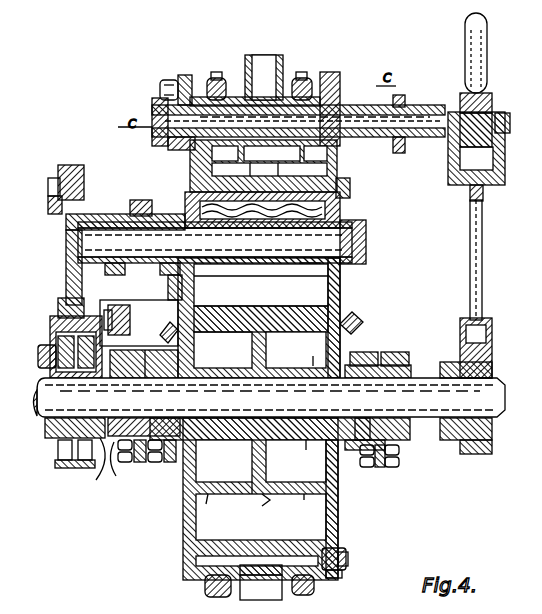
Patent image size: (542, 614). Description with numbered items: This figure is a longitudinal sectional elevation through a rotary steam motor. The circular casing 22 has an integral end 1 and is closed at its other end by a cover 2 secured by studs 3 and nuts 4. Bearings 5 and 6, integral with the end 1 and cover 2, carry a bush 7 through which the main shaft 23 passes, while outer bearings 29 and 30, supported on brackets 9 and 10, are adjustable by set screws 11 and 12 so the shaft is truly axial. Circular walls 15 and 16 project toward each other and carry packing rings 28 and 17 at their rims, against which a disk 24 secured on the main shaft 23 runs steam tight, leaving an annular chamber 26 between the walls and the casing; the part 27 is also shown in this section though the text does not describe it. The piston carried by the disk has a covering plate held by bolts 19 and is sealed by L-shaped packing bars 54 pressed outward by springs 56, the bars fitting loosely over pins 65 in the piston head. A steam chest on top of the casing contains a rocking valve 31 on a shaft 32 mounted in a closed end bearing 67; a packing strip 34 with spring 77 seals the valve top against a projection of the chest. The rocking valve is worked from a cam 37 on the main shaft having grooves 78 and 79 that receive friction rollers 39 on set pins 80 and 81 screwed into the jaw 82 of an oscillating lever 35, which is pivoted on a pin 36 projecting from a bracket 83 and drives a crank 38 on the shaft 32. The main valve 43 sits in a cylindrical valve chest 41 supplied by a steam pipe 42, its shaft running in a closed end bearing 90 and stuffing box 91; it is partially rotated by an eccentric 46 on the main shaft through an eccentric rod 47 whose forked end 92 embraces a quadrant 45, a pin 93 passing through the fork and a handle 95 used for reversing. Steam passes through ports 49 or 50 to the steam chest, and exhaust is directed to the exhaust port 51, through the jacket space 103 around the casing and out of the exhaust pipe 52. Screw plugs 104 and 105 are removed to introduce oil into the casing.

The integral end 1 is at (183, 521).
The cover 2 is at (338, 520).
The studs 3 is at (348, 556).
The nuts 4 is at (342, 574).
The bearing 5 is at (214, 438).
The bearing 6 is at (306, 452).
The bush 7 is at (204, 365).
The bracket 9 is at (412, 438).
The bracket 10 is at (116, 452).
The set screw 11 is at (390, 467).
The set screw 12 is at (160, 464).
The circular wall 15 is at (207, 504).
The circular wall 16 is at (305, 504).
The steam packing ring 17 is at (260, 504).
The bolts 19 is at (296, 461).
The circular casing 22 is at (340, 303).
The main shaft 23 is at (271, 397).
The disk 24 is at (266, 347).
The annular chamber 26 is at (261, 517).
The partition 27 is at (262, 310).
The steam packing ring 28 is at (261, 285).
The bearing 29 is at (392, 352).
The bearing 30 is at (138, 352).
The rocking valve 31 is at (261, 270).
The shaft 32 is at (215, 248).
The packing strip 34 is at (340, 203).
The oscillating lever 35 is at (67, 268).
The pin 36 is at (60, 306).
The cam 37 is at (60, 430).
The crank 38 is at (128, 214).
The friction rollers 39 is at (58, 346).
The cylindrical valve chest 41 is at (192, 80).
The steam pipe 42 is at (264, 77).
The main valve 43 is at (272, 153).
The quadrant 45 is at (448, 112).
The eccentric 46 is at (460, 352).
The eccentric rod 47 is at (470, 262).
The port 49 is at (263, 166).
The port 50 is at (315, 153).
The exhaust port 51 is at (269, 170).
The exhaust pipe 52 is at (261, 582).
The packing bar 54 is at (52, 214).
The springs 56 is at (58, 194).
The pin 65 is at (152, 214).
The closed end bearing 67 is at (366, 226).
The spring 77 is at (350, 196).
The groove 78 is at (60, 450).
The groove 79 is at (91, 467).
The set pin 80 is at (38, 356).
The set pin 81 is at (55, 403).
The jaw 82 is at (50, 334).
The bracket 83 is at (143, 304).
The closed end bearing 90 is at (158, 102).
The stuffing box 91 is at (332, 98).
The forked end 92 is at (505, 164).
The pin 93 is at (511, 122).
The handle 95 is at (488, 30).
The space 103 is at (257, 561).
The screw plug 104 is at (141, 324).
The screw plug 105 is at (360, 320).